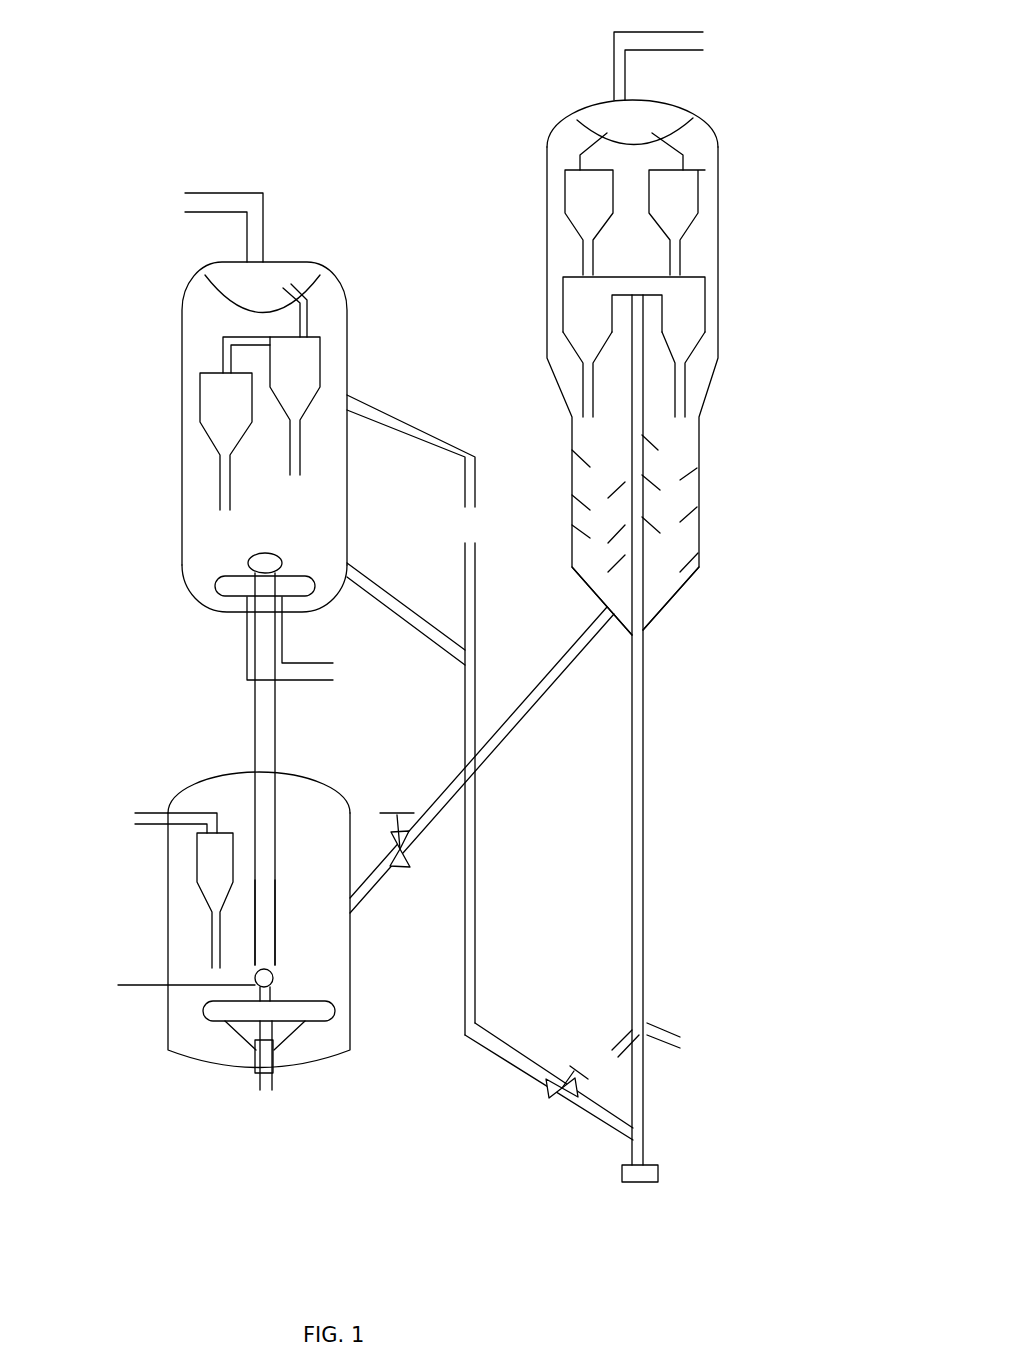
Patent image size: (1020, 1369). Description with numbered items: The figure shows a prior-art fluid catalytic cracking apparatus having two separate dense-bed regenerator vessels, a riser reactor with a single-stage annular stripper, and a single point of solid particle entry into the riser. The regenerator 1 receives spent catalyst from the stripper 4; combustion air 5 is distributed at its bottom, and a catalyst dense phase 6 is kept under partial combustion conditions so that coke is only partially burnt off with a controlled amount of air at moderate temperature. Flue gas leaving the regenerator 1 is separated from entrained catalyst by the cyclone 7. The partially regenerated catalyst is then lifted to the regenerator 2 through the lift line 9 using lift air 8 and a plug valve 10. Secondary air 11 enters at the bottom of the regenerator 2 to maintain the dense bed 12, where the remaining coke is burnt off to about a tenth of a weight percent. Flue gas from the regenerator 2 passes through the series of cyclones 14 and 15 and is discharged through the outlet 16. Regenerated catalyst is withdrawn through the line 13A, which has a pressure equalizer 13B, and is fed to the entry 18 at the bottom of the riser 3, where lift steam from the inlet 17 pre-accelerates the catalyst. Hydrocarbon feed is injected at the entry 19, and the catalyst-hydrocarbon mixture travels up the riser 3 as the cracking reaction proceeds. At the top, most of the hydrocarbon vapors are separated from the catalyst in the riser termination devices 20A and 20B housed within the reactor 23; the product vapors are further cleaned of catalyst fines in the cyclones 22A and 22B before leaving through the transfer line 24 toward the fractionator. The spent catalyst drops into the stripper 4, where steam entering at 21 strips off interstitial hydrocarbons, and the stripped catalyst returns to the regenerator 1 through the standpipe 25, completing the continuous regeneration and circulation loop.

The regenerator 1 is at (352, 1001).
The regenerator 2 is at (350, 490).
The riser 3 is at (646, 828).
The stripper 4 is at (702, 480).
The combustion air 5 is at (266, 1094).
The catalyst dense phase 6 is at (279, 922).
The cyclone 7 is at (184, 890).
The lift air 8 is at (172, 991).
The lift line 9 is at (277, 769).
The plug valve 10 is at (269, 995).
The secondary air 11 is at (322, 671).
The dense bed 12 is at (265, 557).
The line 13A is at (406, 614).
The pressure equalizer 13B is at (490, 767).
The cyclone 14 is at (235, 423).
The cyclone 15 is at (295, 379).
The outlet 16 is at (197, 227).
The inlet 17 is at (639, 1208).
The entry 18 is at (660, 1153).
The entry 19 is at (723, 1062).
The riser termination device 20A is at (587, 361).
The riser termination device 20B is at (683, 361).
The steam entry 21 is at (695, 583).
The cyclone 22A is at (589, 204).
The cyclone 22B is at (677, 204).
The reactor 23 is at (720, 293).
The transfer line 24 is at (659, 50).
The standpipe 25 is at (482, 760).